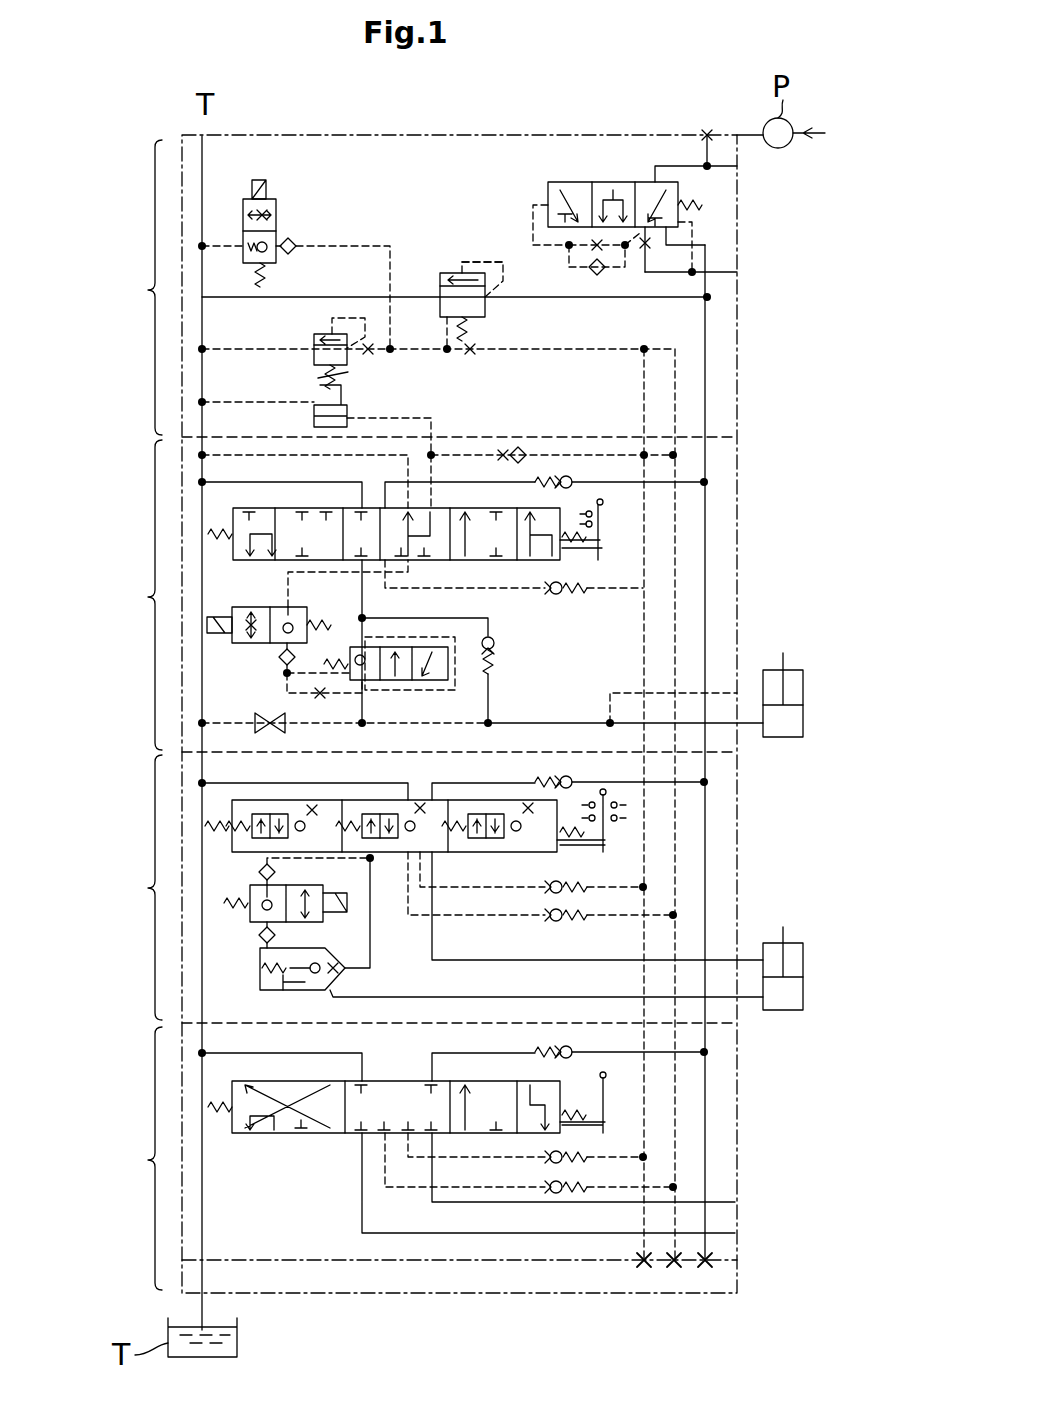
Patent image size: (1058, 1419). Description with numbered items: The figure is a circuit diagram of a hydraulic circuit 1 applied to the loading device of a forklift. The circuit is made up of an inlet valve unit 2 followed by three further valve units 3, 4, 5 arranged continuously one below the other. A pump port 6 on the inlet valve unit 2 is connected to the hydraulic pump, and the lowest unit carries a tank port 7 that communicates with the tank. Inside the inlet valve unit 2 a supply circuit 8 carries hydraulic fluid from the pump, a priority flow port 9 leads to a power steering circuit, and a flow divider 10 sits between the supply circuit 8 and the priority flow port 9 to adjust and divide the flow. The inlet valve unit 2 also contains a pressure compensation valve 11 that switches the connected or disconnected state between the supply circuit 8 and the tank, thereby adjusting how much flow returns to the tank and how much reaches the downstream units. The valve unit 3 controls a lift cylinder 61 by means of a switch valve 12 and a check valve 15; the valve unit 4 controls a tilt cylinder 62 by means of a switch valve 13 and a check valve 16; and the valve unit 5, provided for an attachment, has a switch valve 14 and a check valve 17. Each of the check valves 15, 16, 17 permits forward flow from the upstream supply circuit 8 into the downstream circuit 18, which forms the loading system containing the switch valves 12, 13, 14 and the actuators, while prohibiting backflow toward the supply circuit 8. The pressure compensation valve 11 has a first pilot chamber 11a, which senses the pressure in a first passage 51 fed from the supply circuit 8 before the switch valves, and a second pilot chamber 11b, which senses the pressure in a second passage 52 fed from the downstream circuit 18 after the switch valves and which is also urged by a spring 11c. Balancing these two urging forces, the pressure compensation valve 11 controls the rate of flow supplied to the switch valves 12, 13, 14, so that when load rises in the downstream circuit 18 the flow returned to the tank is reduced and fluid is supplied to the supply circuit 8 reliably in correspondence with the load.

The hydraulic circuit 1 is at (471, 111).
The inlet valve unit 2 is at (138, 287).
The valve unit 3 is at (138, 595).
The valve unit 4 is at (138, 887).
The valve unit 5 is at (138, 1158).
The pump port 6 is at (716, 179).
The tank port 7 is at (211, 1302).
The supply circuit 8 is at (574, 308).
The priority flow port 9 is at (716, 284).
The flow divider 10 is at (525, 187).
The pressure compensation valve 11 is at (377, 320).
The first pilot chamber 11a is at (461, 263).
The second pilot chamber 11b is at (444, 329).
The spring 11c is at (470, 328).
The switch valve 12 is at (585, 569).
The switch valve 13 is at (586, 859).
The switch valve 14 is at (584, 1140).
The check valve 15 is at (565, 461).
The check valve 16 is at (565, 762).
The check valve 17 is at (557, 1031).
The downstream circuit 18 is at (482, 469).
The first passage 51 is at (509, 276).
The second passage 52 is at (626, 346).
The lift cylinder 61 is at (803, 723).
The tilt cylinder 62 is at (803, 995).